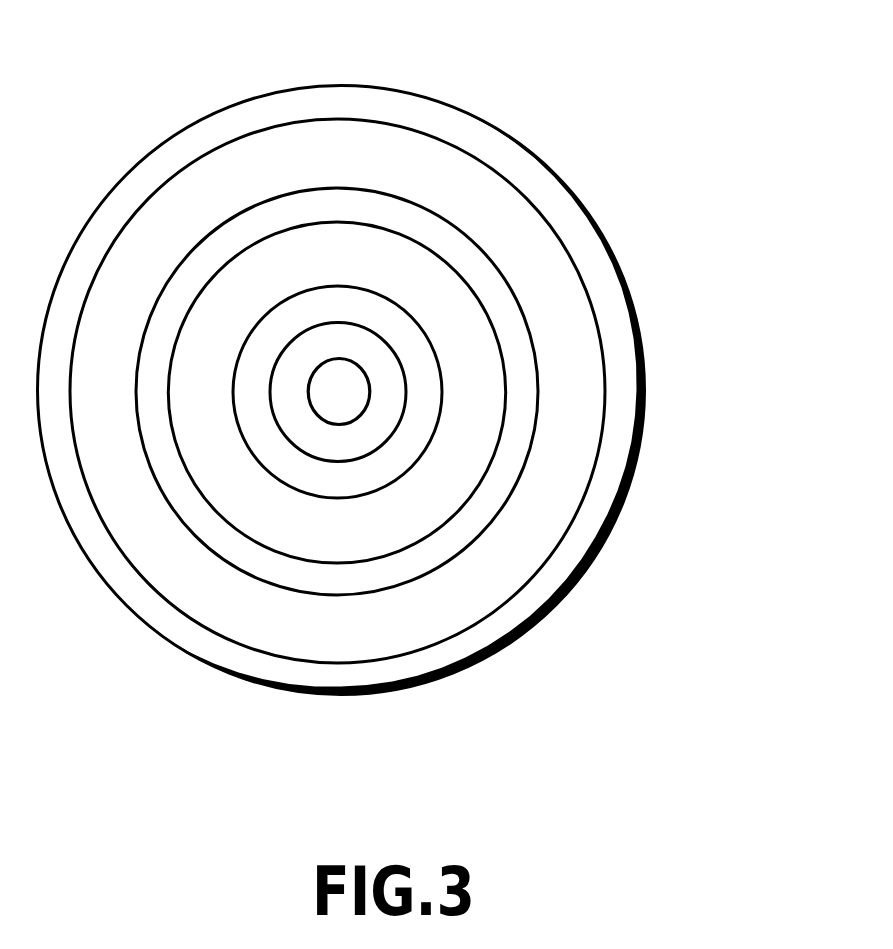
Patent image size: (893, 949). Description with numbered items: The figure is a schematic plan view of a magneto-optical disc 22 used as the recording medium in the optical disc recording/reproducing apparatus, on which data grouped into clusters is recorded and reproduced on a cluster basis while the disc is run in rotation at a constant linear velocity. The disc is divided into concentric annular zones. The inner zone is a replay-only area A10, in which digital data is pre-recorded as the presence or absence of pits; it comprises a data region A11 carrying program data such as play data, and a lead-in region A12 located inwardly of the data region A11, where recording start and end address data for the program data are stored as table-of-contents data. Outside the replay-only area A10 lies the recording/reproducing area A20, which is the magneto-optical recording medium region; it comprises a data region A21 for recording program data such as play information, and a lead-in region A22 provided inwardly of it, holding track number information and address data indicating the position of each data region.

The magneto-optical disc 22 is at (541, 135).
The replay-only area A10 is at (494, 388).
The data region A11 is at (485, 357).
The lead-in region A12 is at (415, 343).
The recording/reproducing area A20 is at (435, 391).
The data region A21 is at (525, 563).
The lead-in region A22 is at (505, 482).